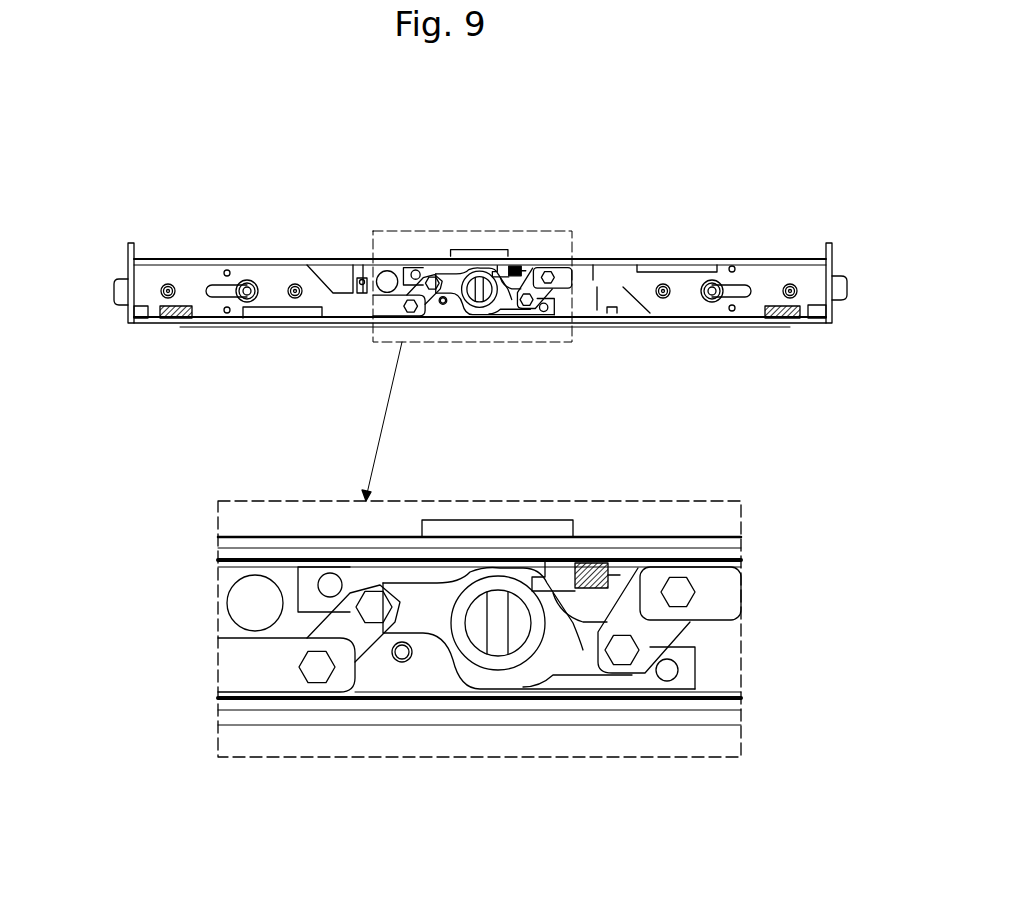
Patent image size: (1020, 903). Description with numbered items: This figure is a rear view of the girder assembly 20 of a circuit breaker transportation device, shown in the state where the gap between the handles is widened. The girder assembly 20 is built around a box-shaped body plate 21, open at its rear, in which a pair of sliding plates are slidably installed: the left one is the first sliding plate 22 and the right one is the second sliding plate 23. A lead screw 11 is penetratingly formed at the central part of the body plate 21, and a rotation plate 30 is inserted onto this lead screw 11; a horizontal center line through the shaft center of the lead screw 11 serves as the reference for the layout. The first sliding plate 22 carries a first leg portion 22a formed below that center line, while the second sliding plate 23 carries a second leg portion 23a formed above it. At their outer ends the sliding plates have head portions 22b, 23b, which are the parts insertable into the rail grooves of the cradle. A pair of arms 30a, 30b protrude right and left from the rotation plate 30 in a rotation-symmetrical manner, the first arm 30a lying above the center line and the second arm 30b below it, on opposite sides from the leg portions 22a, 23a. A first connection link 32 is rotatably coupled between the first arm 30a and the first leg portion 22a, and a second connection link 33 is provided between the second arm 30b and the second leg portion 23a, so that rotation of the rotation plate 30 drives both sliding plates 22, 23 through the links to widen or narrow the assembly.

The lead screw 11 is at (478, 297).
The girder assembly 20 is at (127, 309).
The body plate 21 is at (290, 260).
The first sliding plate 22 is at (263, 277).
The first leg portion 22a is at (387, 307).
The head portion 22b is at (116, 288).
The second sliding plate 23 is at (763, 275).
The second leg portion 23a is at (570, 277).
The head portion 23b is at (833, 287).
The rotation plate 30 is at (477, 272).
The first arm 30a is at (450, 282).
The second arm 30b is at (517, 265).
The first connection link 32 is at (417, 272).
The second connection link 33 is at (540, 313).